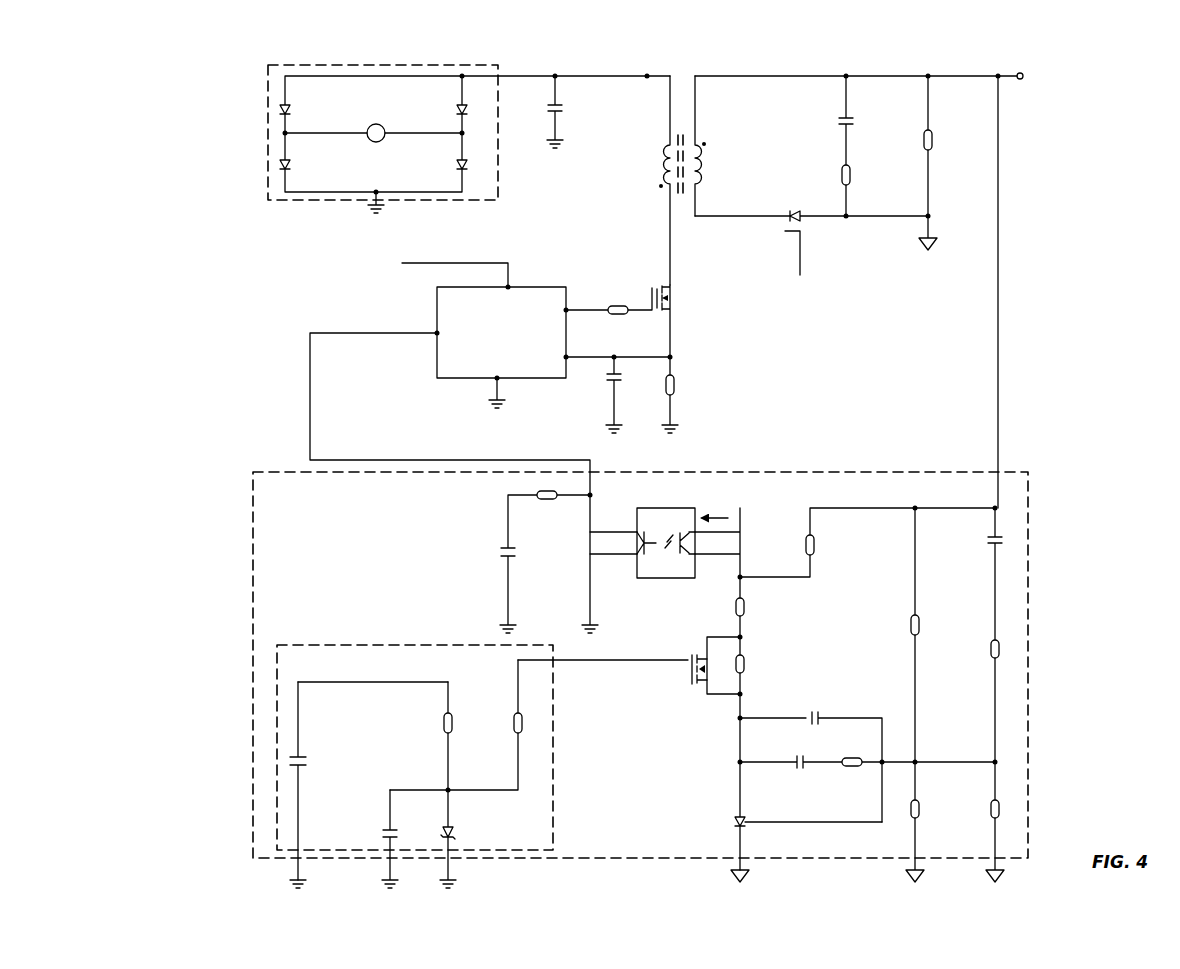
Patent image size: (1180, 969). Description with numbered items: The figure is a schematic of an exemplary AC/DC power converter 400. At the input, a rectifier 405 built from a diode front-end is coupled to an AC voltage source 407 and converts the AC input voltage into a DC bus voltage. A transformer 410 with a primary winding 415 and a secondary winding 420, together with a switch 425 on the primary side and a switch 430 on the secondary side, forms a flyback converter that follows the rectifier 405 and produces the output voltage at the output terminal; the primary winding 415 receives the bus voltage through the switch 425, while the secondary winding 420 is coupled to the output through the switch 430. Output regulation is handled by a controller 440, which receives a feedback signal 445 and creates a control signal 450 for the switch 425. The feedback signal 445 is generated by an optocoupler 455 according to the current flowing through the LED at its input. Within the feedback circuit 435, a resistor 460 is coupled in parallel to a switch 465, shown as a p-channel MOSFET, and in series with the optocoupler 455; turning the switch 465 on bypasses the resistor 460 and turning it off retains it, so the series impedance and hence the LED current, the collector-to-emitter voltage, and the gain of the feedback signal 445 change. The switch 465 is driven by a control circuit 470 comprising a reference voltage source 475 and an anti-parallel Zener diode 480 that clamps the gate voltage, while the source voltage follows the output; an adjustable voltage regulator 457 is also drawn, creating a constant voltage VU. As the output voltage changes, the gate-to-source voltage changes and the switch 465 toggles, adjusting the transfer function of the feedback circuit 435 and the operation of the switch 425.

The AC/DC power converter 400 is at (155, 80).
The rectifier 405 is at (325, 64).
The AC voltage source 407 is at (376, 145).
The transformer 410 is at (685, 72).
The primary winding 415 is at (662, 152).
The secondary winding 420 is at (712, 148).
The switch 425 is at (688, 316).
The switch 430 is at (812, 245).
The feedback circuit 435 is at (253, 642).
The controller 440 is at (536, 286).
The feedback signal 445 is at (307, 374).
The control signal 450 is at (586, 316).
The optocoupler 455 is at (670, 588).
The adjustable voltage regulator 457 is at (737, 816).
The resistor 460 is at (762, 643).
The switch 465 is at (690, 692).
The control circuit 470 is at (398, 645).
The reference voltage source 475 is at (310, 752).
The Zener diode 480 is at (460, 830).